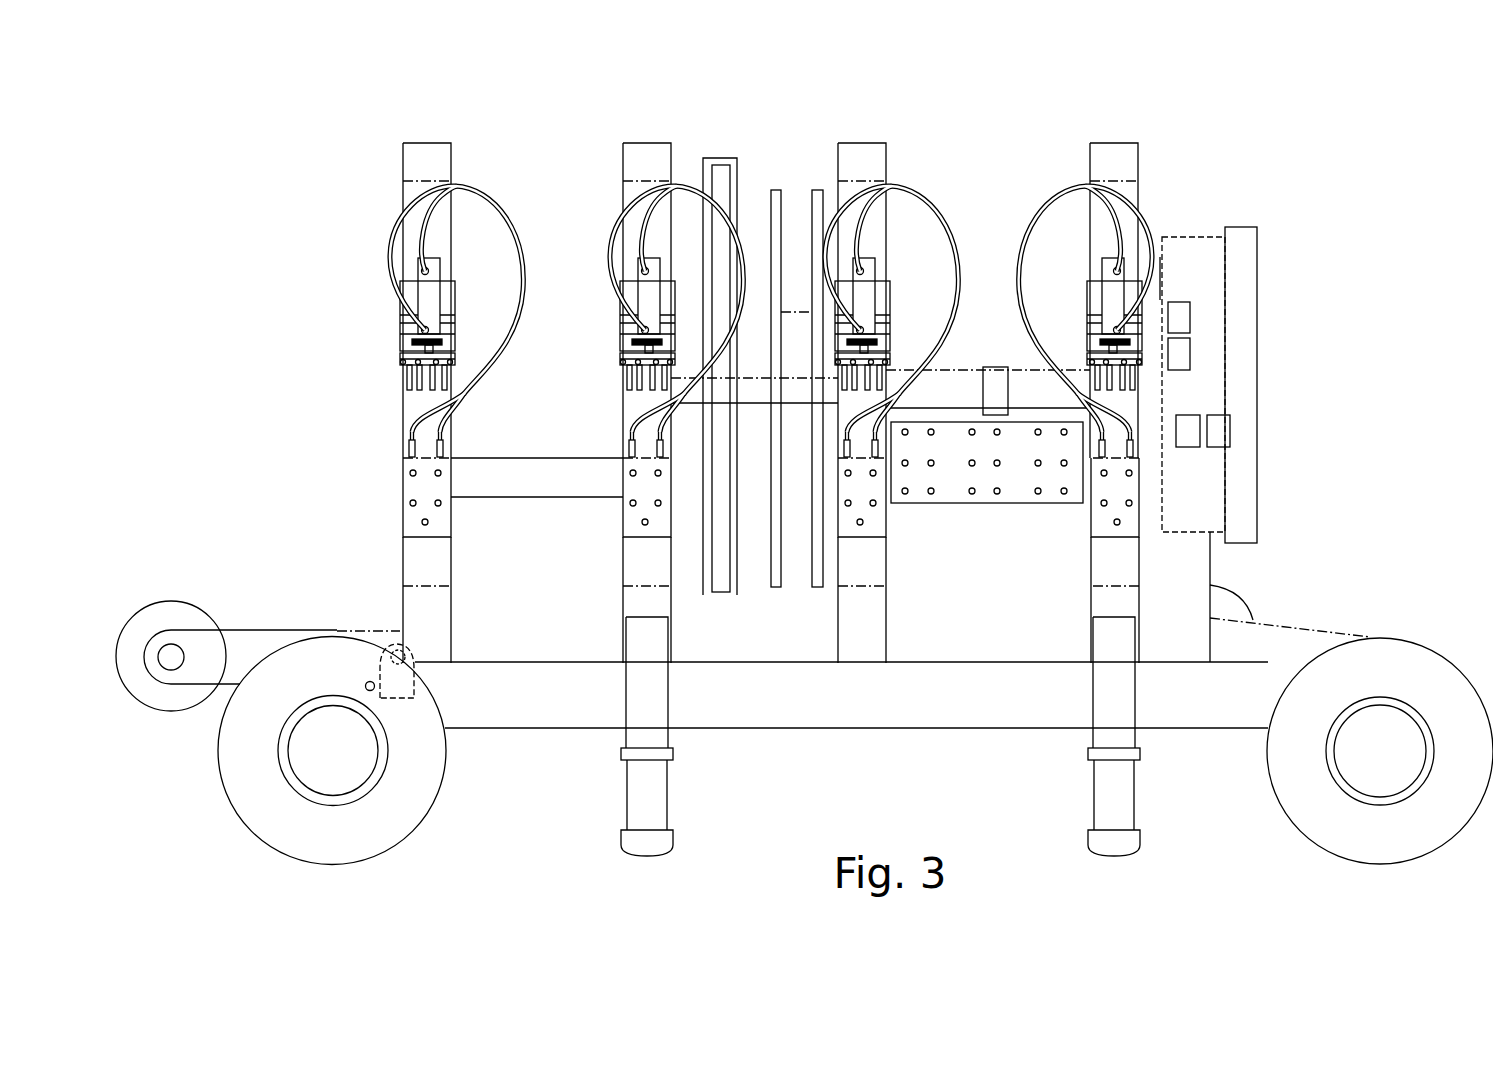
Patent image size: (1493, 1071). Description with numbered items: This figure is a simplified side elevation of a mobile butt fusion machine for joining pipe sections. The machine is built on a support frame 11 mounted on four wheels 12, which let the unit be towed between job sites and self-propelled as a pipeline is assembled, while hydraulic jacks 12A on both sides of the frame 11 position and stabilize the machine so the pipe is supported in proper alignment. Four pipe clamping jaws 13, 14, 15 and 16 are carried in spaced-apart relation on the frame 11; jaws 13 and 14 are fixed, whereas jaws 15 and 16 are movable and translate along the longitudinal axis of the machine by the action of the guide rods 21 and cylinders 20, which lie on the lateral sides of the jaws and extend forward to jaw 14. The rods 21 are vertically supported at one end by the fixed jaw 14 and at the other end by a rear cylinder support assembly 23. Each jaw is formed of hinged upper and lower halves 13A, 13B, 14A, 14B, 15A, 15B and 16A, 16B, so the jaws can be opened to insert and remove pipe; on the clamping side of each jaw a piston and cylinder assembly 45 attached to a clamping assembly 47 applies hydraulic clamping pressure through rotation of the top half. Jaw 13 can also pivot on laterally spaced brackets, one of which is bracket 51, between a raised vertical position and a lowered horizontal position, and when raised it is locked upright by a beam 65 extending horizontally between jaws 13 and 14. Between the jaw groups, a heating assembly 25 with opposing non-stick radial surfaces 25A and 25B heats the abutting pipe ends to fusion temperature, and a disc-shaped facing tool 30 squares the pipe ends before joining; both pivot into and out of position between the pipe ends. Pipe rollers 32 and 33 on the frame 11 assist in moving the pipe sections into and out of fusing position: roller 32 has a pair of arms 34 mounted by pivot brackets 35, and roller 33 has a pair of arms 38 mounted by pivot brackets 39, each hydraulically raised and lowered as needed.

The support frame 11 is at (998, 722).
The wheels 12 is at (437, 755).
The hydraulic jacks 12A is at (670, 768).
The pipe clamping jaw 13 is at (400, 172).
The upper jaw half 13A is at (452, 168).
The lower jaw half 13B is at (400, 560).
The pipe clamping jaw 14 is at (623, 158).
The upper jaw half 14A is at (622, 197).
The lower jaw half 14B is at (622, 568).
The pipe clamping jaw 15 is at (888, 190).
The upper jaw half 15A is at (889, 222).
The lower jaw half 15B is at (882, 648).
The pipe clamping jaw 16 is at (1145, 190).
The upper jaw half 16A is at (1140, 152).
The lower jaw half 16B is at (1088, 566).
The cylinders 20 is at (1150, 373).
The guide rods 21 is at (955, 372).
The rear cylinder support assembly 23 is at (1258, 372).
The heating assembly 25 is at (720, 158).
The non-stick radial surface 25A is at (733, 168).
The non-stick radial surface 25B is at (777, 190).
The facing tool 30 is at (816, 190).
The pipe roller 32 is at (165, 600).
The pipe roller 33 is at (1243, 582).
The arms 34 is at (265, 630).
The pivot brackets 35 is at (366, 685).
The arms 38 is at (1307, 625).
The pivot brackets 39 is at (1353, 640).
The piston and cylinder assembly 45 is at (440, 268).
The clamping assembly 47 is at (458, 378).
The bracket 51 is at (397, 645).
The beam 65 is at (560, 488).